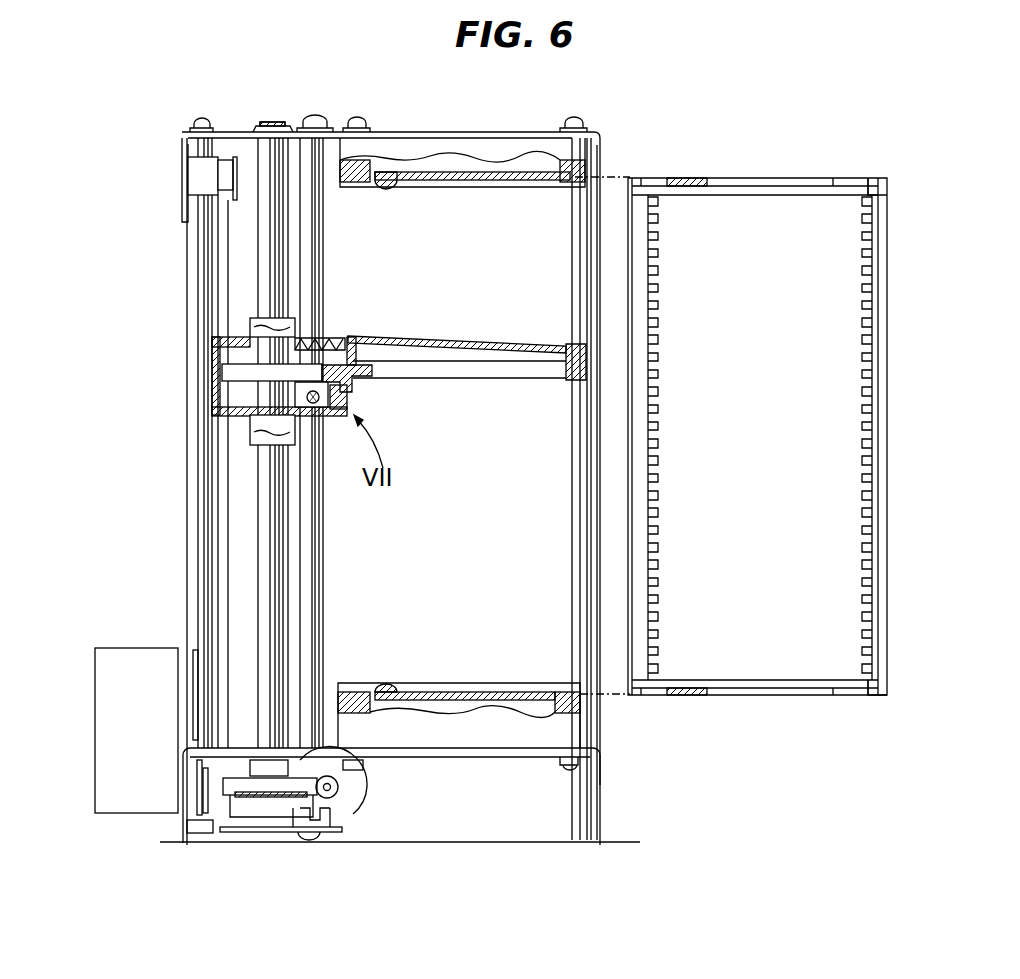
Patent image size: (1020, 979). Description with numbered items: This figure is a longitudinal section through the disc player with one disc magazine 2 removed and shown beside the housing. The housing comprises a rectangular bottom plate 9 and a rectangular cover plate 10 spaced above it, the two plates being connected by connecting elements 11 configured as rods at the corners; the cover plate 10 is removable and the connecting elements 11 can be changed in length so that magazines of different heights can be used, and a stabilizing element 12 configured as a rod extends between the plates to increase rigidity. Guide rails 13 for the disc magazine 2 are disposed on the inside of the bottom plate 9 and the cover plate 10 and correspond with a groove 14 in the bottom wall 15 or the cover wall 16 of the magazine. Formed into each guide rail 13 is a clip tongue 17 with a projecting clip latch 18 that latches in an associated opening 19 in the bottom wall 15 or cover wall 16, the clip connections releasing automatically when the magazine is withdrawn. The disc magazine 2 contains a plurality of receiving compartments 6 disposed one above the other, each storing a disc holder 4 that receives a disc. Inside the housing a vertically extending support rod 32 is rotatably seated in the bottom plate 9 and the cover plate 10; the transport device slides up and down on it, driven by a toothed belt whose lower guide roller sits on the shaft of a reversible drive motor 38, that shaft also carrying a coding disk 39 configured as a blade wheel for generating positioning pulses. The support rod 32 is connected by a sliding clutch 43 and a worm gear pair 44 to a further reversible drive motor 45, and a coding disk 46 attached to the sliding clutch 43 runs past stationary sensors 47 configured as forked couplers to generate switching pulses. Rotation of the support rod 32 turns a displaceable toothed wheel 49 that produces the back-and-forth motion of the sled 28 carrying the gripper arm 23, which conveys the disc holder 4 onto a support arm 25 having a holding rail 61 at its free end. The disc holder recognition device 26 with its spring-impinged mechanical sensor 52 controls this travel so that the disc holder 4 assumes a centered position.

The disc magazine 2 is at (887, 370).
The disc holder 4 is at (455, 372).
The receiving compartment 6 is at (658, 315).
The bottom plate 9 is at (528, 757).
The cover plate 10 is at (440, 132).
The connecting element 11 is at (195, 490).
The stabilizing element 12 is at (320, 265).
The guide rail 13 is at (587, 177).
The groove 14 is at (820, 178).
The bottom wall 15 is at (880, 695).
The cover wall 16 is at (875, 183).
The clip tongue 17 is at (480, 182).
The clip latch 18 is at (388, 183).
The opening 19 is at (690, 178).
The gripper arm 23 is at (358, 386).
The support arm 25 is at (487, 340).
The disc holder recognition device 26 is at (222, 356).
The sled 28 is at (318, 398).
The support rod 32 is at (265, 556).
The drive motor 38 is at (95, 670).
The coding disk 39 is at (200, 650).
The sliding clutch 43 is at (200, 778).
The worm gear pair 44 is at (356, 794).
The drive motor 45 is at (345, 775).
The coding disk 46 is at (310, 800).
The sensor 47 is at (215, 826).
The toothed wheel 49 is at (230, 371).
The sensor 52 is at (350, 338).
The holding rail 61 is at (566, 378).